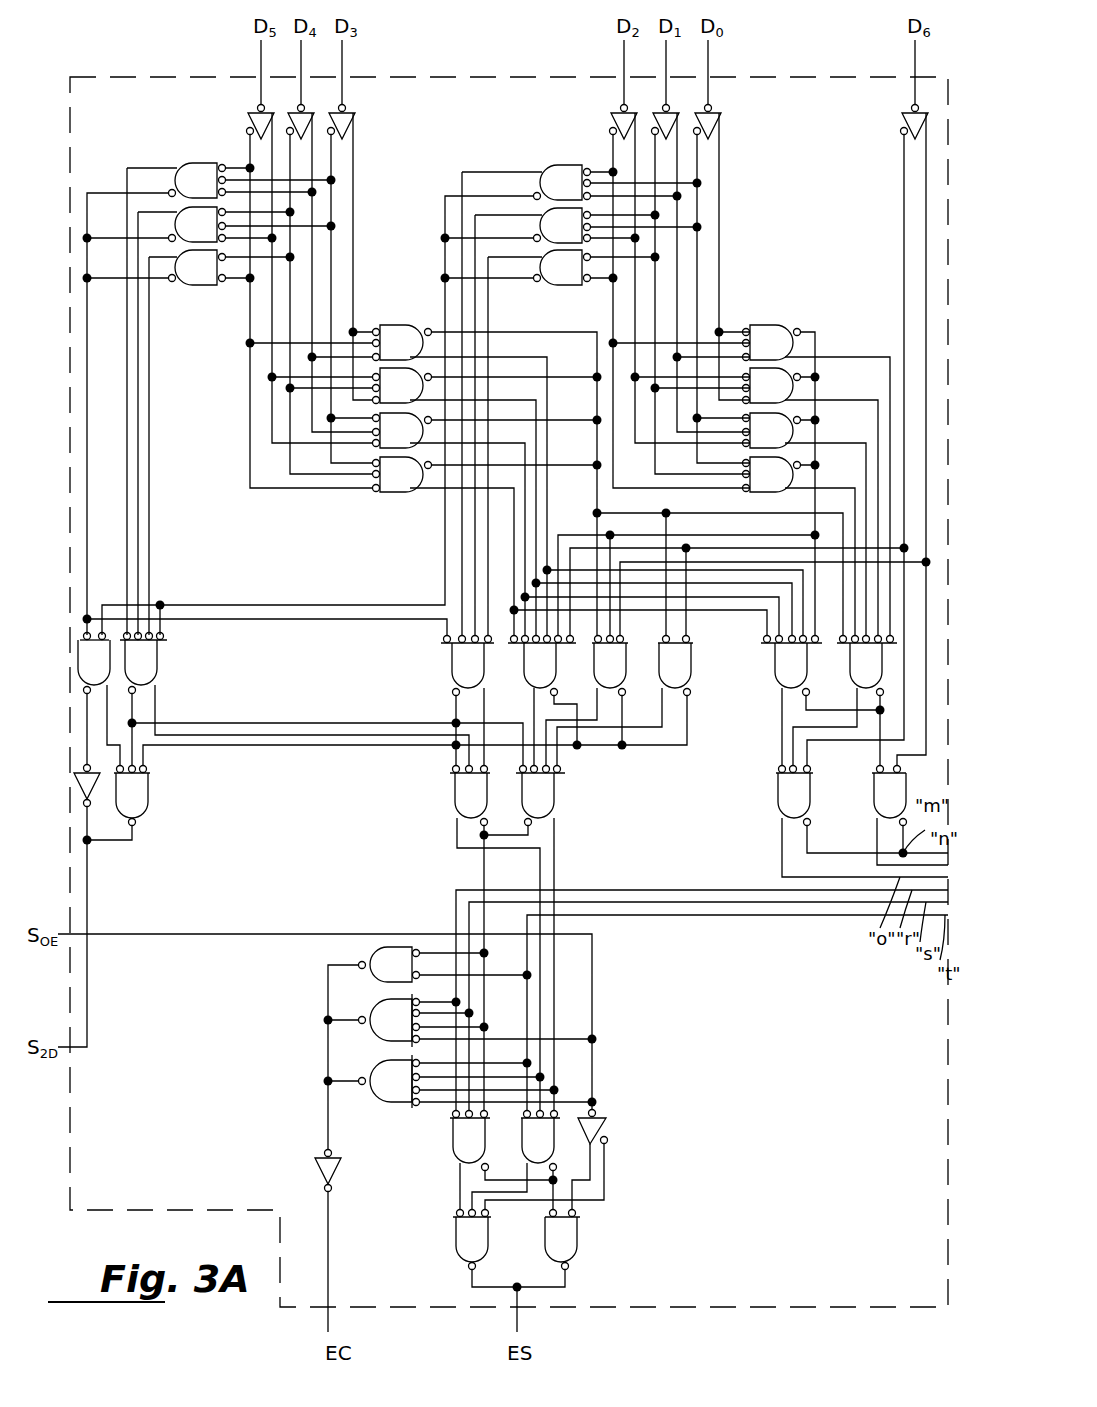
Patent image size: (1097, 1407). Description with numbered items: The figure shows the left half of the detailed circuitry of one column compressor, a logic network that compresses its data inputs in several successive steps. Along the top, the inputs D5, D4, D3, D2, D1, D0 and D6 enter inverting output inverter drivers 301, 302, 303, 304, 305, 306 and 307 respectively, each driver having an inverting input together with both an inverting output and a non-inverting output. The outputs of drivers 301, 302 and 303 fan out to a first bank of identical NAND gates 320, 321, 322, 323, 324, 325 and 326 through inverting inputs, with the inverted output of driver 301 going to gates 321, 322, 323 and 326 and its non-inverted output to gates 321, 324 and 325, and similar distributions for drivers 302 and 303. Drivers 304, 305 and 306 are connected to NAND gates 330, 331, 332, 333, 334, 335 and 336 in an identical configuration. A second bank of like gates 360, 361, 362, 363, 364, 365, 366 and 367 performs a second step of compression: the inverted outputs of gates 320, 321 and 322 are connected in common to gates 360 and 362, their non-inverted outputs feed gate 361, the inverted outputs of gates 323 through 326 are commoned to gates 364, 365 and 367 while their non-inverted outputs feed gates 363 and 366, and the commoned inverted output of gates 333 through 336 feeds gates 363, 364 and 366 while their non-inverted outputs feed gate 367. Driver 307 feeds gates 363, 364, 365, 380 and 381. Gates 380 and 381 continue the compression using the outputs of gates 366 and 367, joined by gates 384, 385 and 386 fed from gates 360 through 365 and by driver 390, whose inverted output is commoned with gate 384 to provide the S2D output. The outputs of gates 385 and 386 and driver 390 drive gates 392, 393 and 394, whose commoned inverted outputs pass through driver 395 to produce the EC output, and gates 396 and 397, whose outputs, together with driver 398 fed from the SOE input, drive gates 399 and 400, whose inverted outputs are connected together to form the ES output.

The driver 301 is at (250, 120).
The driver 302 is at (296, 125).
The driver 303 is at (345, 120).
The driver 304 is at (620, 112).
The driver 305 is at (662, 125).
The driver 306 is at (711, 120).
The driver 307 is at (903, 120).
The NAND gate 320 is at (197, 180).
The NAND gate 321 is at (197, 224).
The NAND gate 322 is at (197, 267).
The NAND gate 323 is at (402, 343).
The NAND gate 324 is at (402, 386).
The NAND gate 325 is at (402, 430).
The NAND gate 326 is at (402, 474).
The NAND gate 330 is at (562, 182).
The NAND gate 331 is at (562, 225).
The NAND gate 332 is at (562, 267).
The NAND gate 333 is at (772, 343).
The NAND gate 334 is at (772, 386).
The NAND gate 335 is at (772, 430).
The NAND gate 336 is at (772, 474).
The gate 360 is at (94, 663).
The gate 361 is at (132, 796).
The gate 362 is at (467, 666).
The gate 363 is at (542, 666).
The gate 364 is at (610, 666).
The gate 365 is at (675, 666).
The gate 366 is at (791, 666).
The gate 367 is at (867, 666).
The gate 380 is at (794, 796).
The gate 381 is at (889, 796).
The gate 384 is at (143, 663).
The gate 385 is at (470, 796).
The gate 386 is at (540, 796).
The driver 390 is at (96, 792).
The gate 392 is at (389, 964).
The gate 393 is at (389, 1020).
The gate 394 is at (389, 1081).
The driver 395 is at (335, 1176).
The gate 396 is at (470, 1141).
The gate 397 is at (540, 1141).
The driver 398 is at (600, 1134).
The gate 399 is at (472, 1240).
The gate 400 is at (562, 1240).